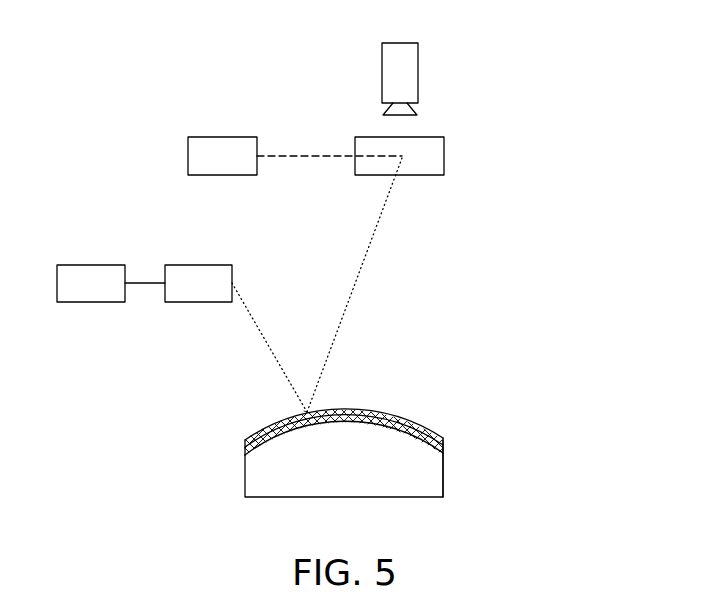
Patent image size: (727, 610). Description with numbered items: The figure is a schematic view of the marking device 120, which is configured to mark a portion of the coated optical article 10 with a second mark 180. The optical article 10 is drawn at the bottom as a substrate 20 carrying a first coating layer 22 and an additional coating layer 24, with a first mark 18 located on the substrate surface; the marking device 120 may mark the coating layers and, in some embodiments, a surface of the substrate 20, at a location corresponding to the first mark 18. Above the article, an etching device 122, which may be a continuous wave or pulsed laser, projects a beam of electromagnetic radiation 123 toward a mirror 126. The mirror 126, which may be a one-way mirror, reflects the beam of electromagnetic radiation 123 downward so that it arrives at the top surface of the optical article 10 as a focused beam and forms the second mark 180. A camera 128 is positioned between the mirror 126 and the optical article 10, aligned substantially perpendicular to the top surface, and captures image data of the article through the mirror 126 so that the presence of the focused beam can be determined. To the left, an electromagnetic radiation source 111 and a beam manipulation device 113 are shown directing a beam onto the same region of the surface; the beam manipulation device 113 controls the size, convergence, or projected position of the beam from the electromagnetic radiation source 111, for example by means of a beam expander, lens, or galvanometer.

The optical article 10 is at (460, 409).
The first mark 18 is at (283, 425).
The substrate 20 is at (245, 472).
The first coating layer 22 is at (443, 457).
The additional coating layer 24 is at (440, 432).
The electromagnetic radiation source 111 is at (95, 265).
The beam manipulation device 113 is at (200, 265).
The marking device 120 is at (607, 202).
The etching device 122 is at (225, 137).
The beam of electromagnetic radiation 123 is at (358, 278).
The mirror 126 is at (444, 158).
The camera 128 is at (418, 73).
The second mark 180 is at (318, 414).